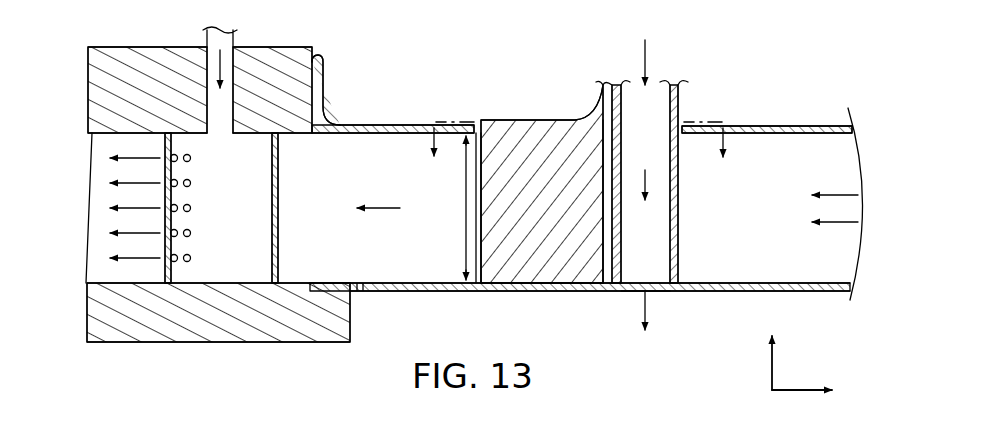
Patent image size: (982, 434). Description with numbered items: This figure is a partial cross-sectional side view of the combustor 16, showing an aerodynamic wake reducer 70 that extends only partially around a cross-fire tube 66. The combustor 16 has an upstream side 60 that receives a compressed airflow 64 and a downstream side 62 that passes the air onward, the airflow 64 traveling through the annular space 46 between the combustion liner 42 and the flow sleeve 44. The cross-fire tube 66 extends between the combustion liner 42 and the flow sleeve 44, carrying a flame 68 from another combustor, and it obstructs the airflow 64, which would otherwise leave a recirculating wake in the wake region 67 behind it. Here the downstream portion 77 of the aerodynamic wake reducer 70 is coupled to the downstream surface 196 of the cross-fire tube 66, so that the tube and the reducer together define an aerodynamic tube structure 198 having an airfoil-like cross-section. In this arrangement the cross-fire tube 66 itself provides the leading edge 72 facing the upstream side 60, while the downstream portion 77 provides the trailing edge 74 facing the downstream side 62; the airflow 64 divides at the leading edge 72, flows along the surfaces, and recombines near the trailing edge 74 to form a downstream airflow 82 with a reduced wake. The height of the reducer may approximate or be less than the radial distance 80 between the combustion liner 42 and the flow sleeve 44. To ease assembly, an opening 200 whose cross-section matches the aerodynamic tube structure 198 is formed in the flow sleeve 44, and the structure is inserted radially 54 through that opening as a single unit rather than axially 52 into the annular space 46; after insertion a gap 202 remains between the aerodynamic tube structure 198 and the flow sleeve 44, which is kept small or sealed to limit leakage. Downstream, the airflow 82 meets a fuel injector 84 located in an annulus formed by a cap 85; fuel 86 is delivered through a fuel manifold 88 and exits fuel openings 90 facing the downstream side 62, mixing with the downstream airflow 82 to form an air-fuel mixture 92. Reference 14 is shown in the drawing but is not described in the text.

The turbine shroud 14 is at (579, 157).
The combustor 16 is at (812, 72).
The combustion liner 42 is at (362, 292).
The flow sleeve 44 is at (346, 126).
The annular space 46 is at (393, 140).
The axial direction 52 is at (796, 392).
The radial direction 54 is at (775, 368).
The upstream side 60 is at (866, 283).
The downstream side 62 is at (72, 286).
The airflow 64 is at (846, 212).
The cross-fire tube 66 is at (621, 238).
The wake region 67 is at (458, 244).
The flame 68 is at (640, 62).
The aerodynamic wake reducer 70 is at (530, 112).
The leading edge 72 is at (680, 236).
The trailing edge 74 is at (468, 237).
The downstream portion 77 is at (549, 262).
The radial distance 80 is at (462, 262).
The downstream airflow 82 is at (380, 205).
The fuel injector 84 is at (278, 212).
The cap 85 is at (118, 49).
The fuel 86 is at (211, 72).
The fuel manifold 88 is at (242, 115).
The fuel openings 90 is at (192, 208).
The air-fuel mixture 92 is at (140, 156).
The downstream surface 196 is at (601, 262).
The aerodynamic tube structure 198 is at (565, 112).
The opening 200 is at (693, 92).
The gap 202 is at (470, 116).